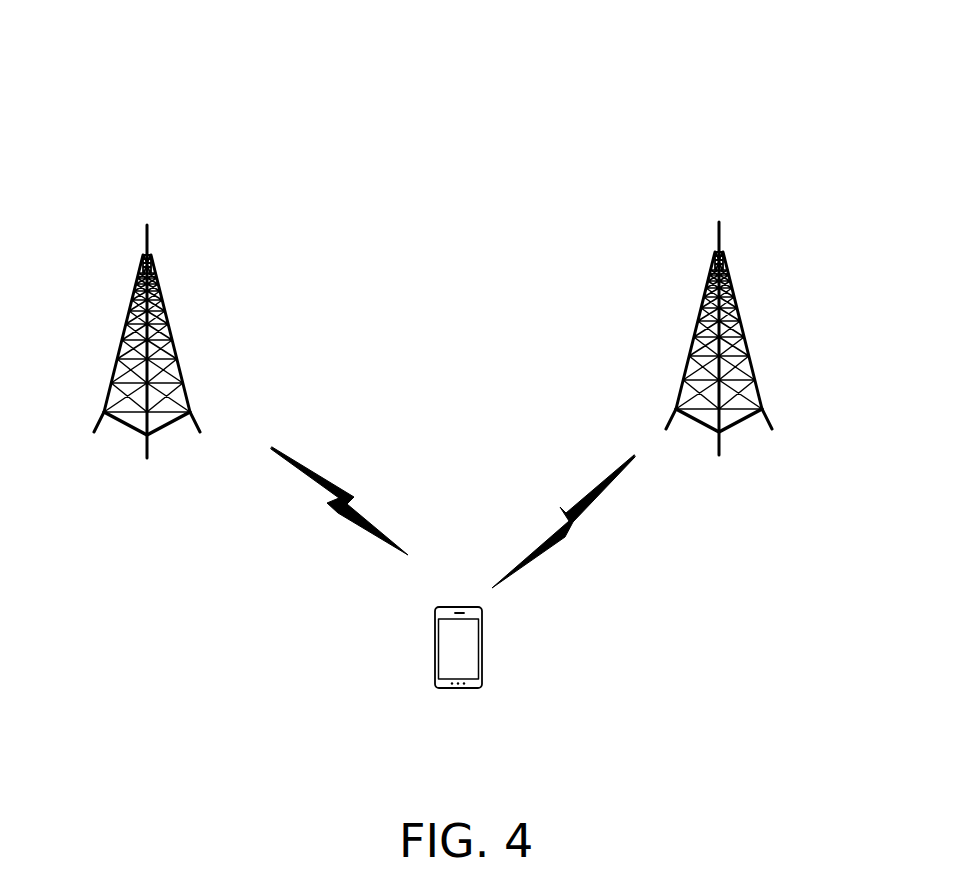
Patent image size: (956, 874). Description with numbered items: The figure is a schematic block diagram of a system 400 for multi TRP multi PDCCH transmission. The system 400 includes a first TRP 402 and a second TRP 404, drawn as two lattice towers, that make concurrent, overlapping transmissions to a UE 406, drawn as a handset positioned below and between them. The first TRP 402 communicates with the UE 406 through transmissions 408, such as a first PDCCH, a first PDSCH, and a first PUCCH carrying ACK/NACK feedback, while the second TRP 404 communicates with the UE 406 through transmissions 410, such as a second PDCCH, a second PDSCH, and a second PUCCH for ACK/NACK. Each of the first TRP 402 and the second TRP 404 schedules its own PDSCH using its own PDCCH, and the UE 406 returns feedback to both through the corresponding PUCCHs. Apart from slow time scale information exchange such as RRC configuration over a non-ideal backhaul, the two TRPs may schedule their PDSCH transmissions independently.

The system for multi TRP multi PDCCH transmission 400 is at (96, 61).
The first TRP 402 is at (190, 407).
The second TRP 404 is at (753, 373).
The UE 406 is at (418, 648).
The transmissions 408 is at (343, 502).
The transmissions 410 is at (568, 535).